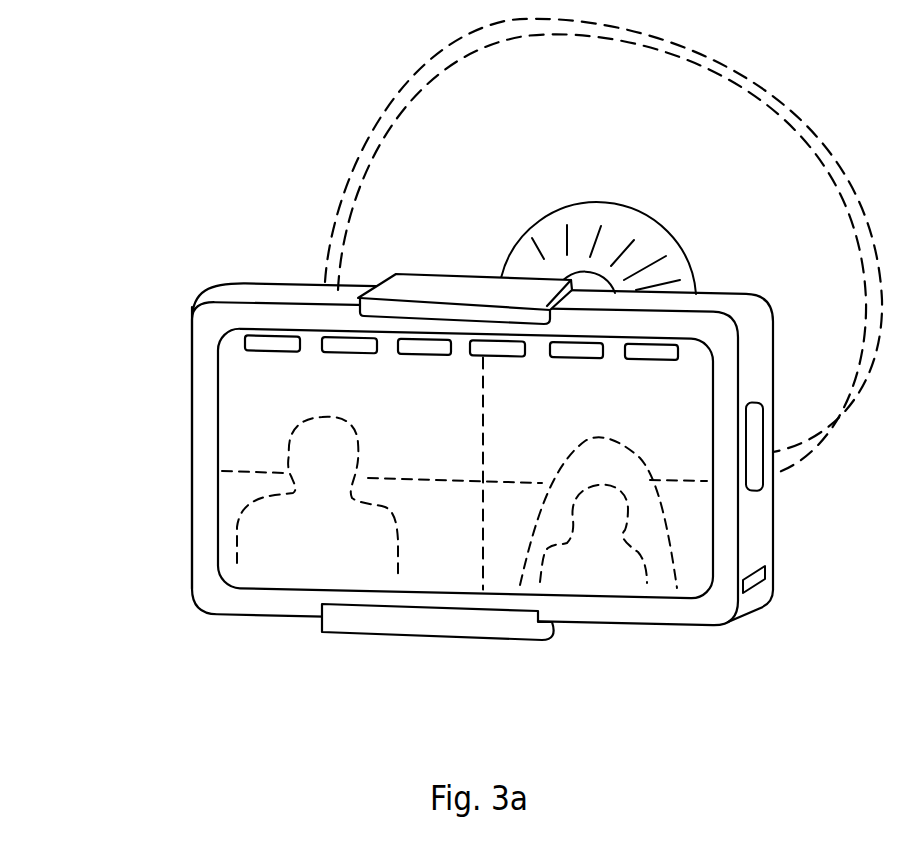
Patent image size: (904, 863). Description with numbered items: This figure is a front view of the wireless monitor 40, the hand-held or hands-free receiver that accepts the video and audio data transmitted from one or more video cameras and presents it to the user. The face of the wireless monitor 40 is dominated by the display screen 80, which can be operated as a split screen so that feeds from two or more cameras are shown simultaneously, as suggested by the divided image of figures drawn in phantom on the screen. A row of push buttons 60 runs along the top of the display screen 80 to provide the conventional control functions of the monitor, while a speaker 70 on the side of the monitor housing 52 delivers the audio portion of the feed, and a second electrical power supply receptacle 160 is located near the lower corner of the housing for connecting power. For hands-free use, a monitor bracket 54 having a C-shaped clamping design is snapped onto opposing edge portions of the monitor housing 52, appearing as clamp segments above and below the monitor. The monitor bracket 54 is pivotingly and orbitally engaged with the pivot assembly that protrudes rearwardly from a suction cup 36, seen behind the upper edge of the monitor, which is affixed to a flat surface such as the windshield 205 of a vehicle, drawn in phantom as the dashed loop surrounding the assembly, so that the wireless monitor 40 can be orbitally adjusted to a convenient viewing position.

The wireless monitor 40 is at (140, 174).
The monitor housing 52 is at (240, 620).
The monitor bracket 54 is at (456, 290).
The push button 60 is at (415, 345).
The speaker 70 is at (754, 467).
The display screen 80 is at (252, 430).
The suction cup 36 is at (654, 240).
The second electrical power supply receptacle 160 is at (757, 581).
The windshield 205 is at (760, 195).